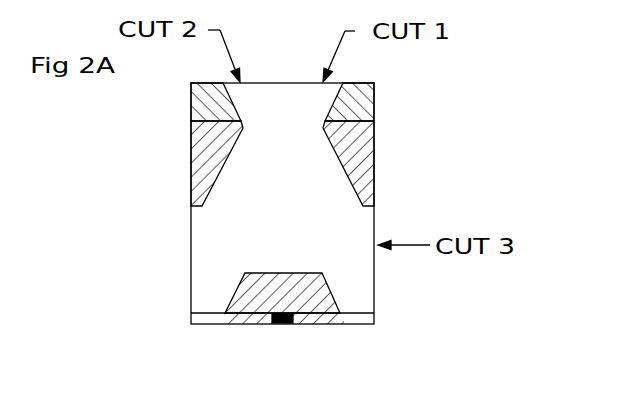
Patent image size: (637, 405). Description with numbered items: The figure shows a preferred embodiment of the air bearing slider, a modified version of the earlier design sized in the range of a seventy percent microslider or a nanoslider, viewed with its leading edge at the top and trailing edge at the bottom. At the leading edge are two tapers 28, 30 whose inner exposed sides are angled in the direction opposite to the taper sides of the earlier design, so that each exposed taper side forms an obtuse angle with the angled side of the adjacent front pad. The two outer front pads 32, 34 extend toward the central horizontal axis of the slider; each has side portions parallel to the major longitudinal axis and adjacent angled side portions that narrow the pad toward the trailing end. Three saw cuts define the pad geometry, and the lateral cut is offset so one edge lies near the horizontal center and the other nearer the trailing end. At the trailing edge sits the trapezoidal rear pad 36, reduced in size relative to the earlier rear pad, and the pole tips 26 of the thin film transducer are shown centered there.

The pole tips 26 is at (296, 335).
The taper 28 is at (189, 117).
The taper 30 is at (377, 120).
The outer front pad 32 is at (193, 167).
The outer front pad 34 is at (372, 168).
The rear pad 36 is at (244, 324).